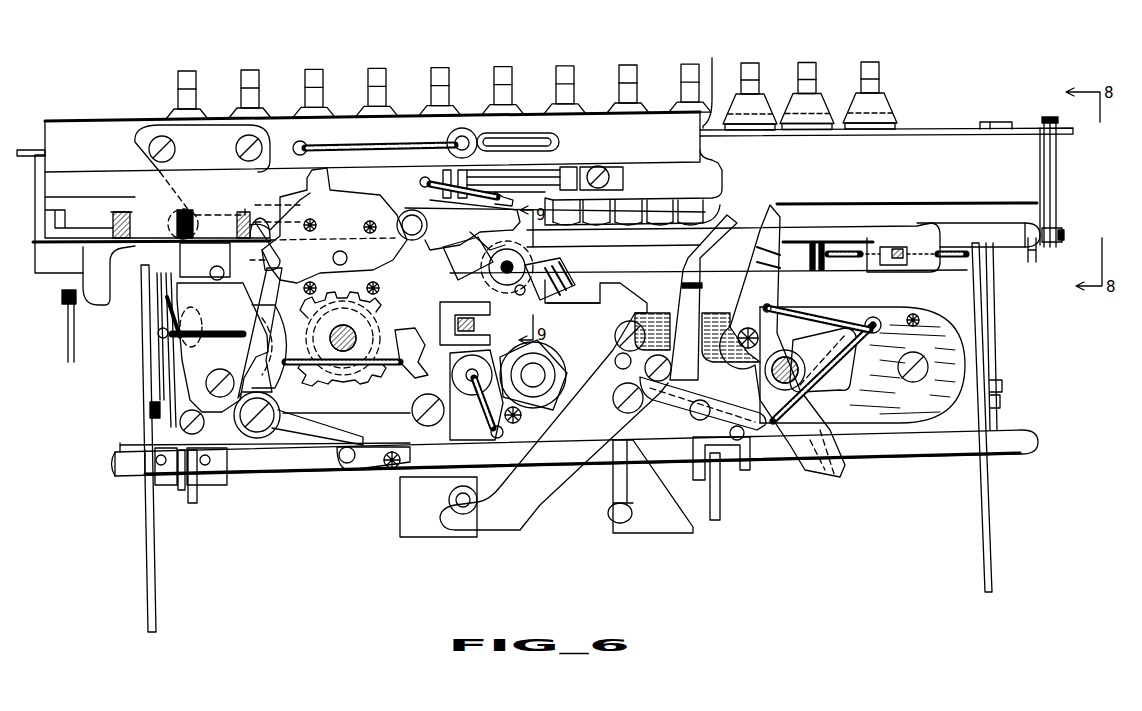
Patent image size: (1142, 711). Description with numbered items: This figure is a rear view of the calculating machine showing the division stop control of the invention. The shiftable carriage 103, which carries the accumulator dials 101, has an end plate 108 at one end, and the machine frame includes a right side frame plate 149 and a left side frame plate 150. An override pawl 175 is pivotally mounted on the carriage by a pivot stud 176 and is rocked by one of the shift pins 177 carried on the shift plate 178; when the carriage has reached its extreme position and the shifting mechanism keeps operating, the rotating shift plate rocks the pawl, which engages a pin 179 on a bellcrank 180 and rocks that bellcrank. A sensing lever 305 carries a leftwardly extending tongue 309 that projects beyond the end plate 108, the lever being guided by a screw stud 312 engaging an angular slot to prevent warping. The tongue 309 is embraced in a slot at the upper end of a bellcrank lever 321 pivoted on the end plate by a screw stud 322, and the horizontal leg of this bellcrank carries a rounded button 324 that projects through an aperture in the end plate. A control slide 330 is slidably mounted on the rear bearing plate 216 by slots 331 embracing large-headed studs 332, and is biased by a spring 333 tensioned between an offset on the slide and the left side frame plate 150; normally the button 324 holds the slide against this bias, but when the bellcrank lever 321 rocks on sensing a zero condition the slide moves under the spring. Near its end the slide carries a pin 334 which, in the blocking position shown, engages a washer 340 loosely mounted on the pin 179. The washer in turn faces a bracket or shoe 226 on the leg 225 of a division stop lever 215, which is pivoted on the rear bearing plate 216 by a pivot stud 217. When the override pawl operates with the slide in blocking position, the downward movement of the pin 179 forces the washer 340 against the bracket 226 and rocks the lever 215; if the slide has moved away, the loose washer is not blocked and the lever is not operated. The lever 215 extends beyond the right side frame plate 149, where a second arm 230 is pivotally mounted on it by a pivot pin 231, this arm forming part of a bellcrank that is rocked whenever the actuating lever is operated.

The accumulator dials 101 is at (703, 126).
The shiftable carriage 103 is at (104, 111).
The end plate 108 is at (1040, 138).
The right side frame plate 149 is at (143, 505).
The left side frame plate 150 is at (988, 532).
The override pawl 175 is at (375, 196).
The pivot stud 176 is at (412, 222).
The shift pin 177 is at (305, 225).
The shift plate 178 is at (338, 218).
The pin 179 is at (507, 264).
The bellcrank 180 is at (607, 312).
The division stop lever 215 is at (233, 255).
The rear bearing plate 216 is at (826, 293).
The pivot stud 217 is at (430, 260).
The leg 225 is at (473, 257).
The bracket 226 is at (490, 250).
The second arm 230 is at (68, 332).
The pivot pin 231 is at (62, 303).
The lever 305 is at (912, 128).
The tongue 309 is at (1062, 117).
The screw stud 312 is at (988, 120).
The bellcrank lever 321 is at (1057, 172).
The screw stud 322 is at (1062, 232).
The button 324 is at (1032, 258).
The control slide 330 is at (940, 226).
The slots 331 is at (882, 266).
The large-headed studs 332 is at (898, 266).
The spring 333 is at (962, 252).
The pin 334 is at (515, 290).
The washer 340 is at (523, 268).